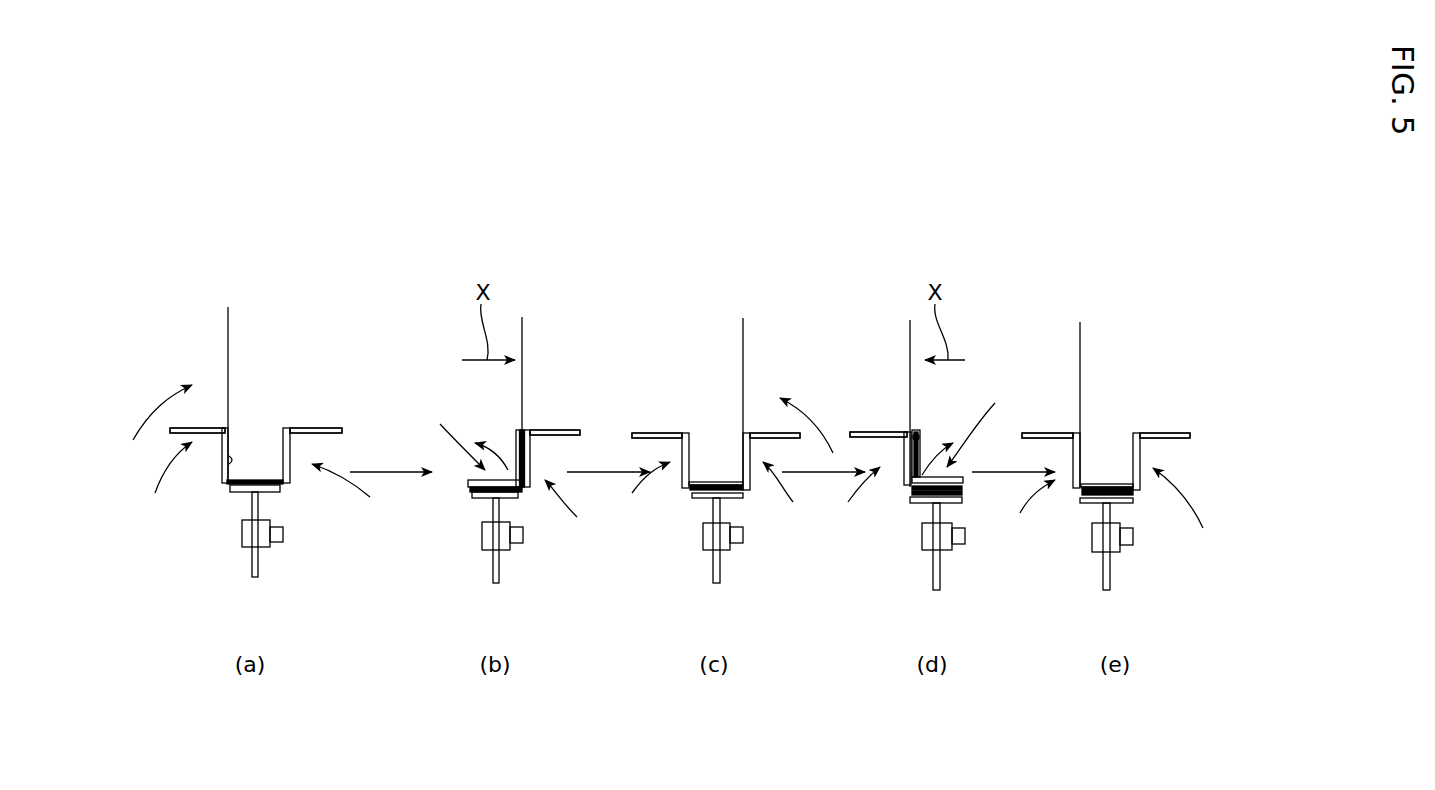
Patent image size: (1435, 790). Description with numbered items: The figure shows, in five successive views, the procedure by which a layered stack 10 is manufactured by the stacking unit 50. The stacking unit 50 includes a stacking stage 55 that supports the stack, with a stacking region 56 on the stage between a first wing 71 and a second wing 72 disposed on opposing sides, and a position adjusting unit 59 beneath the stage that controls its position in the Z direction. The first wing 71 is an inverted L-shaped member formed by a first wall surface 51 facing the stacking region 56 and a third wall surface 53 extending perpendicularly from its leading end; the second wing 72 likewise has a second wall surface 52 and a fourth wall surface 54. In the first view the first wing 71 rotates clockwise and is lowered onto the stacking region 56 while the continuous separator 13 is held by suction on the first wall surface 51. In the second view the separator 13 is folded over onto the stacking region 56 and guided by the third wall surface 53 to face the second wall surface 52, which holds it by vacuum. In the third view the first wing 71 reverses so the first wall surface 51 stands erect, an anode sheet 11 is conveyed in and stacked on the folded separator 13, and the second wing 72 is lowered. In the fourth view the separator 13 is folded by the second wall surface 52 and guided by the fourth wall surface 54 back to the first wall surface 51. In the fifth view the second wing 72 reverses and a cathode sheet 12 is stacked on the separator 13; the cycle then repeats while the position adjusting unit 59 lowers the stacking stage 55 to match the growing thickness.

The layered stack 10 is at (470, 488).
The anode sheet 11 is at (710, 480).
The cathode sheet 12 is at (1103, 480).
The separator 13 is at (228, 352).
The stacking unit 50 is at (280, 383).
The first wall surface 51 is at (233, 462).
The second wall surface 52 is at (292, 470).
The third wall surface 53 is at (198, 428).
The fourth wall surface 54 is at (303, 428).
The stacking stage 55 is at (275, 494).
The stacking region 56 is at (258, 468).
The position adjusting unit 59 is at (248, 540).
The first wing 71 is at (594, 464).
The second wing 72 is at (764, 466).